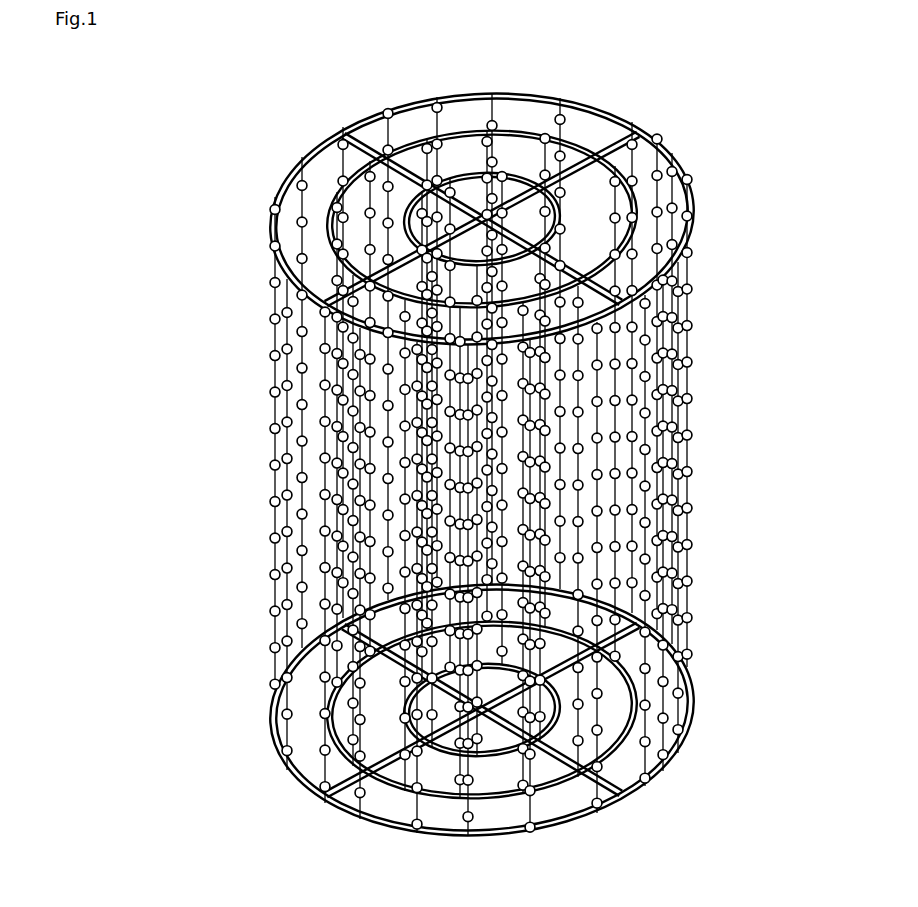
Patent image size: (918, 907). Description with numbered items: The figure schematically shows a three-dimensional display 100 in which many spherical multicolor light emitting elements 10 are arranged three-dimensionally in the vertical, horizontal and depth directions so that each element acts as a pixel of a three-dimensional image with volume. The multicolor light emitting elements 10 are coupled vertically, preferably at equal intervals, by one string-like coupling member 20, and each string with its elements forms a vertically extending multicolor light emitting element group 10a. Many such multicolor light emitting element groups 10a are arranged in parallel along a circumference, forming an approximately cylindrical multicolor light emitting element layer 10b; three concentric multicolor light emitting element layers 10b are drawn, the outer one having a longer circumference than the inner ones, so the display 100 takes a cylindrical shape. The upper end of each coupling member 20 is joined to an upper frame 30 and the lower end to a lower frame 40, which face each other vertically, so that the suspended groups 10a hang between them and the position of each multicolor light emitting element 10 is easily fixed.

The three-dimensional display 100 is at (677, 88).
The multicolor light emitting element 10 is at (489, 427).
The multicolor light emitting element group 10a is at (252, 255).
The multicolor light emitting element layer 10b is at (391, 104).
The string-like coupling member 20 is at (690, 516).
The upper frame 30 is at (305, 167).
The lower frame 40 is at (295, 781).